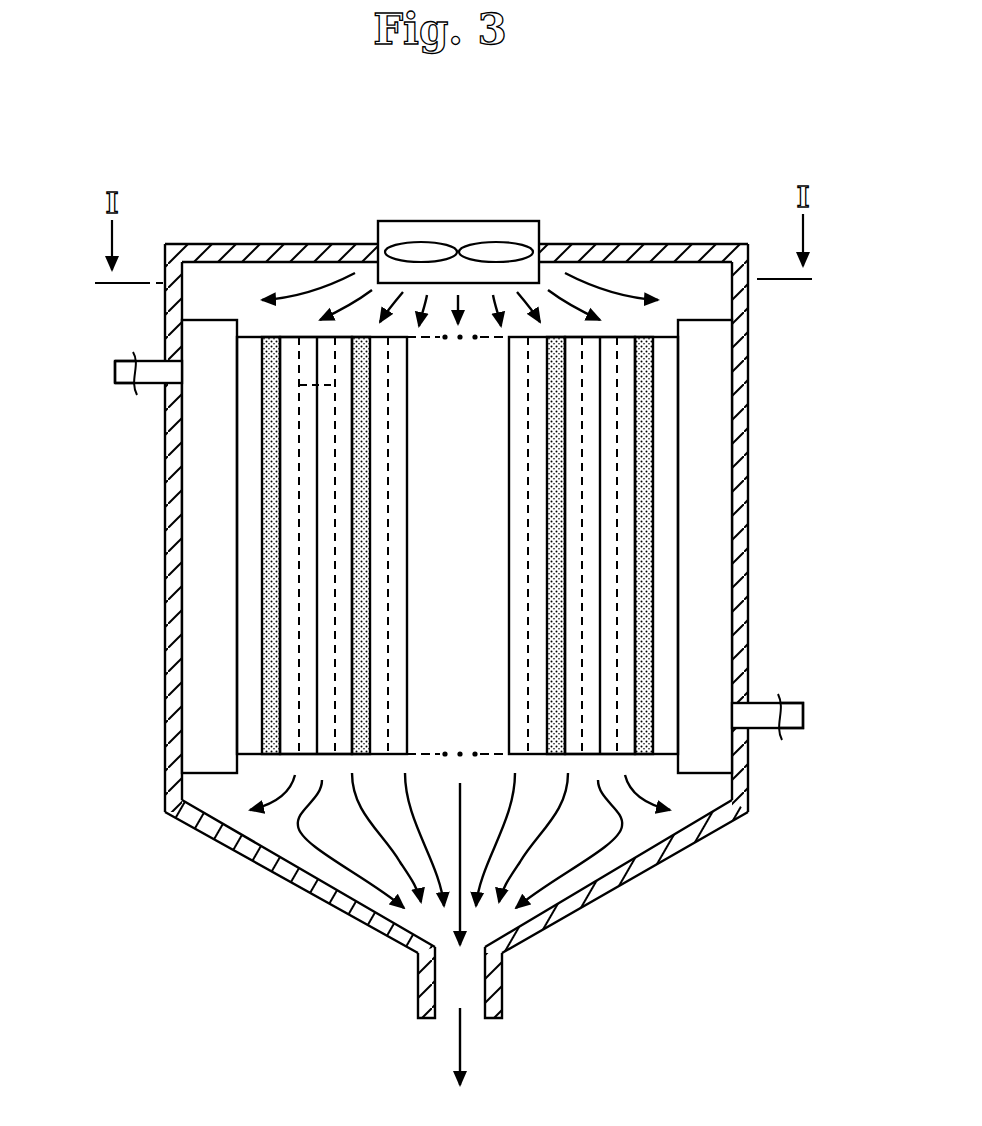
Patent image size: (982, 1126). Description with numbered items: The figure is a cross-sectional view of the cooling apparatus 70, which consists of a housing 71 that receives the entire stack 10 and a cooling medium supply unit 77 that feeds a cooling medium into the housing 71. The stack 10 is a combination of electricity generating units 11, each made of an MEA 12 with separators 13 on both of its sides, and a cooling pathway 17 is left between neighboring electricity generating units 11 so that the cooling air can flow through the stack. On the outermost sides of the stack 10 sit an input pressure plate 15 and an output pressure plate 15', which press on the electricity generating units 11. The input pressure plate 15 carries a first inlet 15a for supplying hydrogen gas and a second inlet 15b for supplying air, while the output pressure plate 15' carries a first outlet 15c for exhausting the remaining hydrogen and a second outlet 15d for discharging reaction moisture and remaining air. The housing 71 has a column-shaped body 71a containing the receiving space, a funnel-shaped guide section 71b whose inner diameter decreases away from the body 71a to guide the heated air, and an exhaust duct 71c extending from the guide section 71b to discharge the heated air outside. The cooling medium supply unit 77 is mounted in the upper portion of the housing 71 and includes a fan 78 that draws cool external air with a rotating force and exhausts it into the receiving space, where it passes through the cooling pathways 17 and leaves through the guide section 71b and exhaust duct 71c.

The stack 10 is at (238, 292).
The electricity generating unit 11 is at (106, 477).
The MEA 12 is at (360, 483).
The separator 13 is at (343, 440).
The input pressure plate 15 is at (137, 541).
The output pressure plate 15' is at (776, 546).
The first inlet 15a is at (148, 360).
The second inlet 15b is at (115, 374).
The first outlet 15c is at (803, 715).
The second outlet 15d is at (757, 702).
The cooling pathway 17 is at (300, 385).
The cooling apparatus 70 is at (512, 143).
The housing 71 is at (606, 232).
The body 71a is at (708, 244).
The guide section 71b is at (259, 862).
The exhaust duct 71c is at (417, 988).
The cooling medium supply unit 77 is at (513, 212).
The fan 78 is at (418, 240).